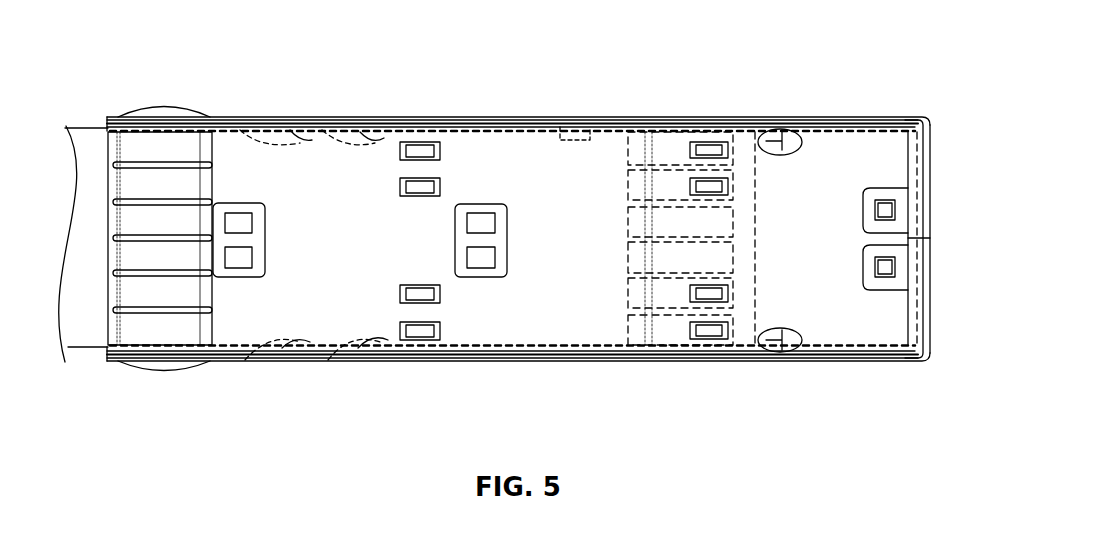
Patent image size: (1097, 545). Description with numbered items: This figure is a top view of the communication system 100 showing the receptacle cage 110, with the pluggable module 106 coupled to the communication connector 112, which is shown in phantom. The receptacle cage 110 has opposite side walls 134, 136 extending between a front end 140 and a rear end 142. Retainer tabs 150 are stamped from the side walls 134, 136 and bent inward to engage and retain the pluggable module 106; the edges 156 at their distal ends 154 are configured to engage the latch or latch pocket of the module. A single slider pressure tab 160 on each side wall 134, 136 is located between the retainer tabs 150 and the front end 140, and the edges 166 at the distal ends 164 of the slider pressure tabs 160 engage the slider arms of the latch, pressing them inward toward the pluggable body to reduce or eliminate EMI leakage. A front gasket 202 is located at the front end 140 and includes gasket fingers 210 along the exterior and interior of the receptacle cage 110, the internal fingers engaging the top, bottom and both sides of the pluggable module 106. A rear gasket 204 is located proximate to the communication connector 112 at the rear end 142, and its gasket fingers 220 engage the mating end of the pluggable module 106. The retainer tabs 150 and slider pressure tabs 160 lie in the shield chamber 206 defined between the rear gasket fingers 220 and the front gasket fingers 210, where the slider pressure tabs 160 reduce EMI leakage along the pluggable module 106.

The communication system 100 is at (512, 222).
The pluggable module 106 is at (80, 338).
The receptacle cage 110 is at (581, 127).
The communication connector 112 is at (835, 124).
The side wall 134 is at (530, 362).
The side wall 136 is at (519, 117).
The front end 140 is at (105, 122).
The rear end 142 is at (935, 136).
The retainer tab 150 is at (335, 130).
The distal end 154 is at (370, 348).
The edge 156 is at (358, 143).
The slider pressure tab 160 is at (262, 130).
The distal end 164 is at (290, 350).
The edge 166 is at (298, 140).
The front gasket 202 is at (180, 112).
The rear gasket 204 is at (700, 128).
The shield chamber 206 is at (451, 124).
The gasket finger 210 is at (163, 150).
The gasket finger 220 is at (670, 140).